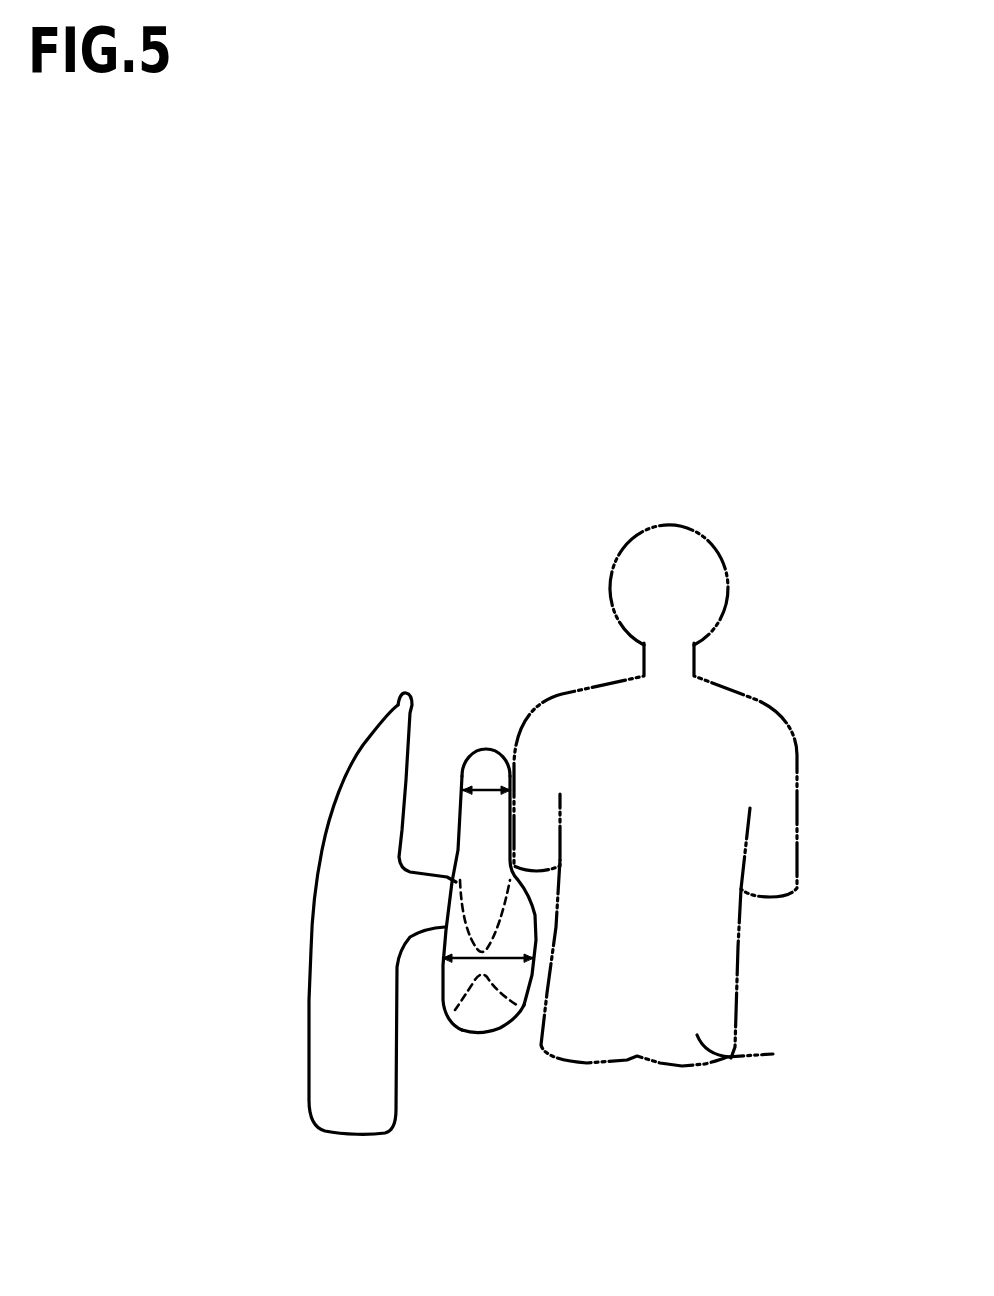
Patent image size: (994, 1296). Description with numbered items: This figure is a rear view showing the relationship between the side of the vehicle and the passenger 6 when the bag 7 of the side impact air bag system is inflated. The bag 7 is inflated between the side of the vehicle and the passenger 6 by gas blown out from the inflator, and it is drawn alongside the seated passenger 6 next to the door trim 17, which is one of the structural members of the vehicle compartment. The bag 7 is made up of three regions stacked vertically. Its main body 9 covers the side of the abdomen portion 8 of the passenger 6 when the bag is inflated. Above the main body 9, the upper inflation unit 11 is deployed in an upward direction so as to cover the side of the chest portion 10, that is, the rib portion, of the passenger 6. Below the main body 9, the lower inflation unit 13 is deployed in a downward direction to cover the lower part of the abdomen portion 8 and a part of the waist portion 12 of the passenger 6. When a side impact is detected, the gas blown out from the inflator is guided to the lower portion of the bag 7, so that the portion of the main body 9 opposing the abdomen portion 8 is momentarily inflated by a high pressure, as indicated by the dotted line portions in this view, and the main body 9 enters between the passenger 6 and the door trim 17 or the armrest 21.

The passenger 6 is at (770, 652).
The bag 7 is at (481, 878).
The abdomen portion 8 is at (670, 937).
The main body 9 is at (454, 1000).
The chest portion 10 is at (698, 760).
The upper inflation unit 11 is at (490, 750).
The waist portion 12 is at (773, 1054).
The lower inflation unit 13 is at (481, 1025).
The door trim 17 is at (400, 835).
The armrest 21 is at (427, 920).